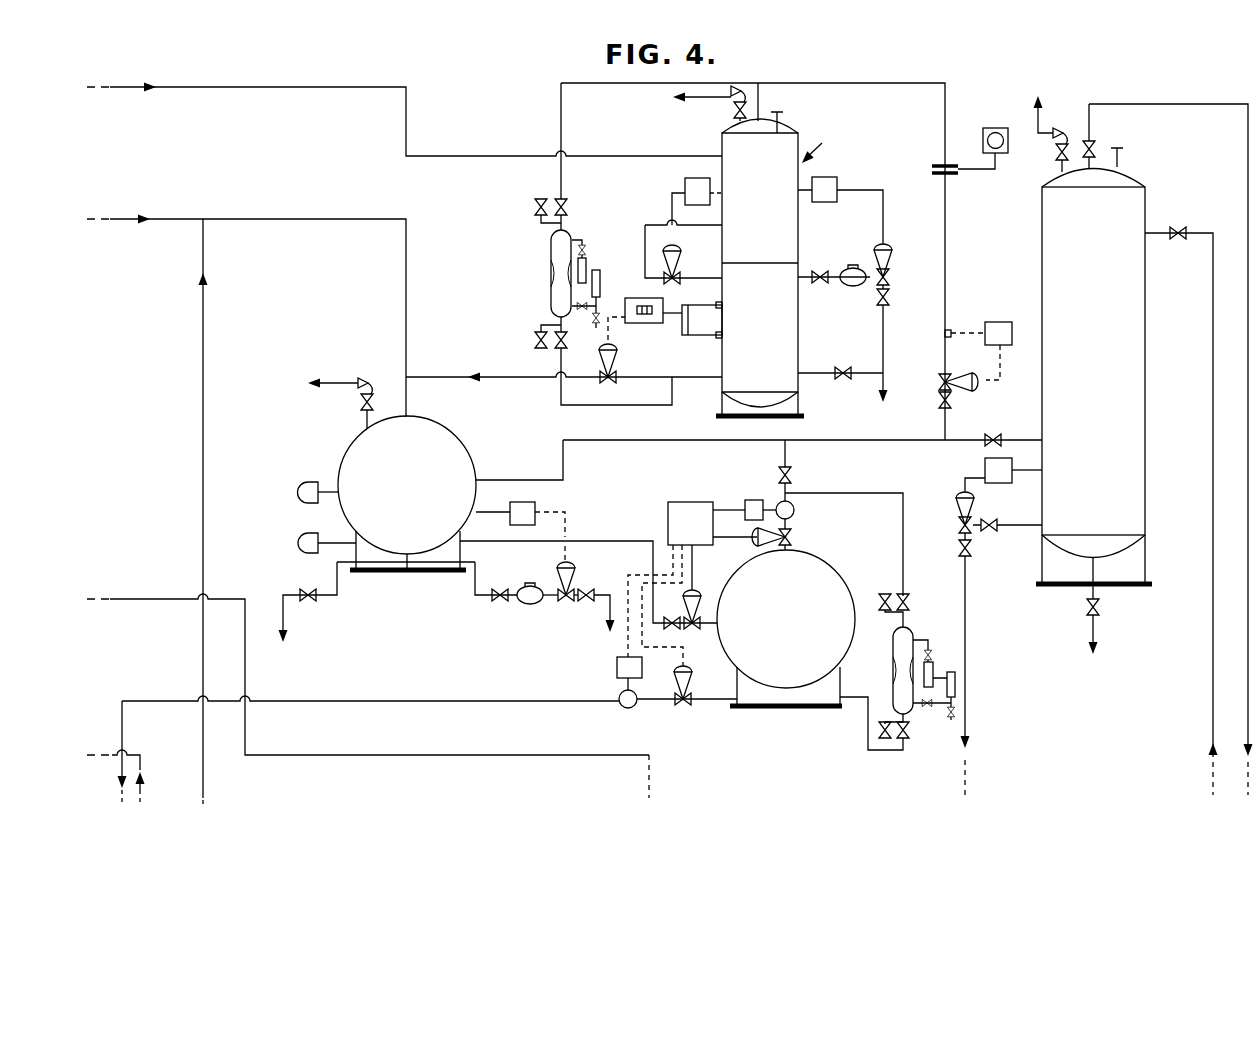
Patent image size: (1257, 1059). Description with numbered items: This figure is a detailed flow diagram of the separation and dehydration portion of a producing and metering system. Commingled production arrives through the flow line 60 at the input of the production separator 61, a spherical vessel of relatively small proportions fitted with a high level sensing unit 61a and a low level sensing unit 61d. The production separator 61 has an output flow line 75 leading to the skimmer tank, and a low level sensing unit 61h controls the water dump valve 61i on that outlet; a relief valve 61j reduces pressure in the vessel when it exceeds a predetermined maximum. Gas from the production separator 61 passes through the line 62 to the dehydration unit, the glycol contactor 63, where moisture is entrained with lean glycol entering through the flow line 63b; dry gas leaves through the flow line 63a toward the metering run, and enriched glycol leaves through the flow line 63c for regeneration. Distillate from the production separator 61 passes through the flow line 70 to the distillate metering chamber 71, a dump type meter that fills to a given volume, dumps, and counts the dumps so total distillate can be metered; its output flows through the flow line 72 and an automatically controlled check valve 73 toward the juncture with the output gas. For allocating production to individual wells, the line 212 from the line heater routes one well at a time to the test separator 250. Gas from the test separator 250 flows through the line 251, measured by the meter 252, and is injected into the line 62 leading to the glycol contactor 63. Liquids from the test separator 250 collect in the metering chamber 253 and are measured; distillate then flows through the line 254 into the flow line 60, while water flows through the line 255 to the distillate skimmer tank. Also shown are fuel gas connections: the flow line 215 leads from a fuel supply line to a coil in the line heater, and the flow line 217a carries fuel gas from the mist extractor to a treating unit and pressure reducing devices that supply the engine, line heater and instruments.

The line 212 is at (240, 78).
The flow line 60 is at (185, 219).
The production separator 61 is at (418, 452).
The high level sensing unit 61a is at (302, 496).
The low level sensing unit 61d is at (302, 546).
The low level sensing unit 61h is at (540, 512).
The water dump valve 61i is at (572, 589).
The relief valve 61j is at (359, 408).
The line 62 is at (733, 442).
The glycol contactor 63 is at (1098, 217).
The flow line 63a is at (1166, 98).
The flow line 63b is at (1194, 230).
The flow line 63c is at (968, 642).
The flow line 70 is at (661, 563).
The distillate metering chamber 71 is at (797, 577).
The flow line 72 is at (706, 698).
The check valve 73 is at (683, 705).
The output flow line 75 is at (606, 606).
The flow line 215 is at (142, 772).
The flow line 217a is at (166, 598).
The test separator 250 is at (776, 166).
The line 251 is at (947, 103).
The meter 252 is at (995, 128).
The metering chamber 253 is at (776, 380).
The line 254 is at (696, 383).
The line 255 is at (880, 385).